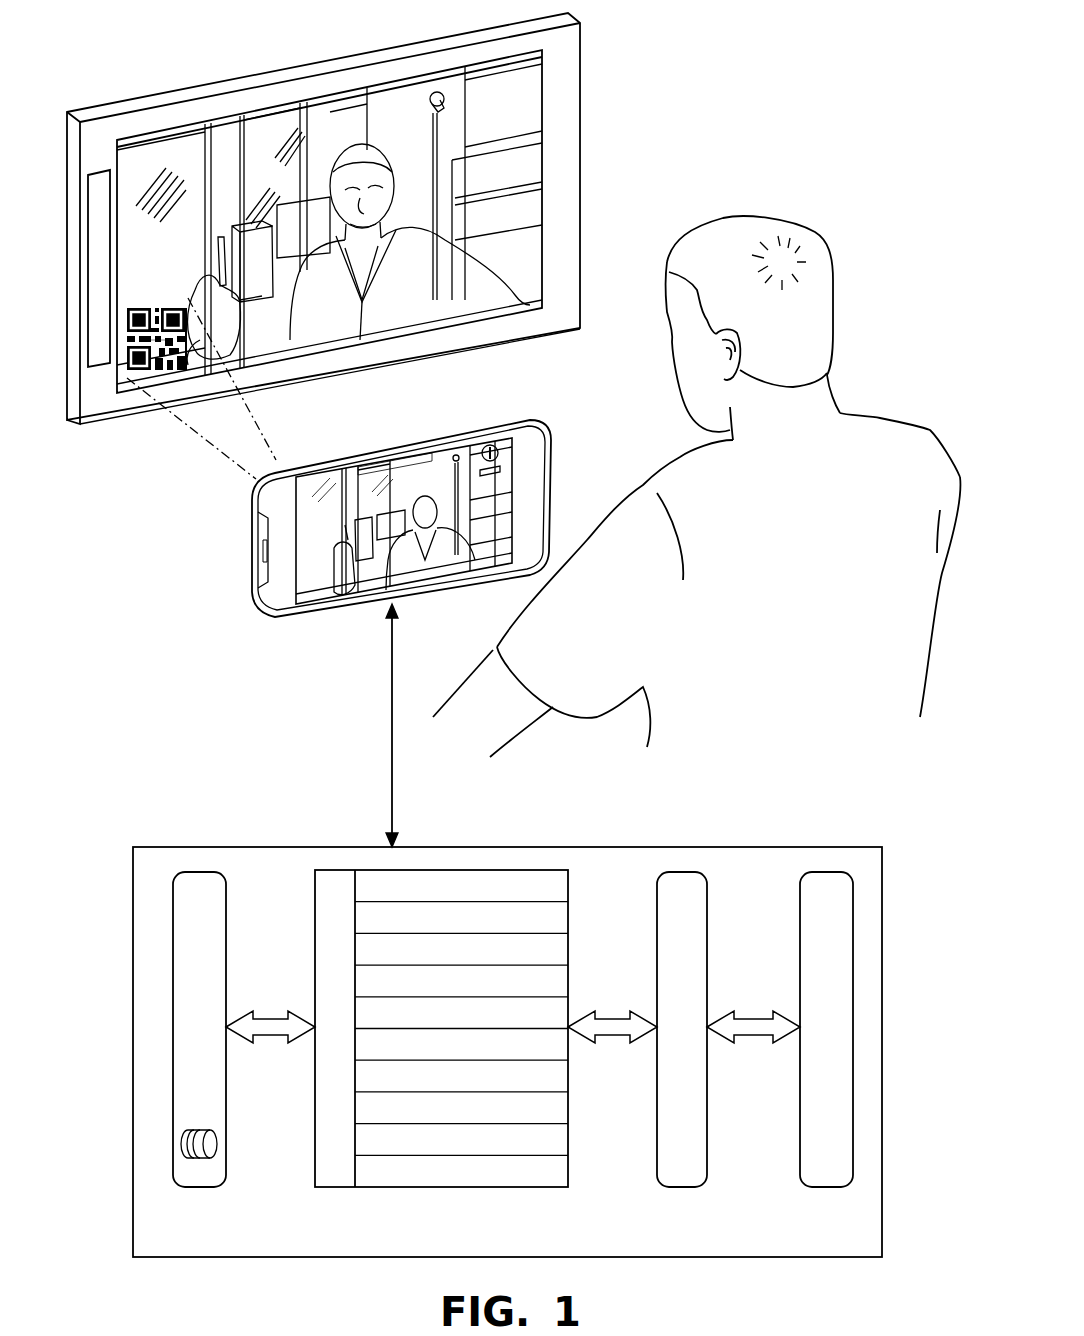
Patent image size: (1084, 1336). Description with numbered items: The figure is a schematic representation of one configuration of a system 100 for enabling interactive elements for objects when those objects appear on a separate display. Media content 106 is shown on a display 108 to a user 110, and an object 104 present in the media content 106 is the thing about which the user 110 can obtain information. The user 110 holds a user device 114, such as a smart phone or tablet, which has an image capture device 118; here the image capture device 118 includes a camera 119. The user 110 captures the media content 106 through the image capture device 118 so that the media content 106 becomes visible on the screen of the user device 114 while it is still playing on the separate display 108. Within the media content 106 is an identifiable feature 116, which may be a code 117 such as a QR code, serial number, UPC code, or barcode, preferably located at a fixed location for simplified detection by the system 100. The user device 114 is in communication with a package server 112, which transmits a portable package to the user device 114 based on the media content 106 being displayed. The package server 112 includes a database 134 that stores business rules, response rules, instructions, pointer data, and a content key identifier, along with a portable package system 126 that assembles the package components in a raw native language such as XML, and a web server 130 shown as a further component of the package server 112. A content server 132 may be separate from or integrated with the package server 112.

The system 100 is at (694, 132).
The object 104 is at (340, 524).
The media content 106 is at (510, 262).
The display 108 is at (190, 81).
The user 110 is at (829, 228).
The package server 112 is at (612, 841).
The user device 114 is at (251, 623).
The identifiable feature 116 is at (126, 352).
The code 117 is at (157, 352).
The image capture device 118 is at (281, 452).
The camera 119 is at (323, 612).
The portable package system 126 is at (682, 1188).
The web server 130 is at (824, 1188).
The content server 132 is at (391, 1188).
The database 134 is at (200, 1188).